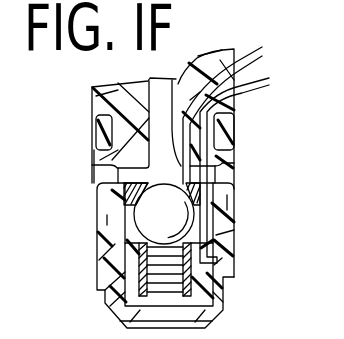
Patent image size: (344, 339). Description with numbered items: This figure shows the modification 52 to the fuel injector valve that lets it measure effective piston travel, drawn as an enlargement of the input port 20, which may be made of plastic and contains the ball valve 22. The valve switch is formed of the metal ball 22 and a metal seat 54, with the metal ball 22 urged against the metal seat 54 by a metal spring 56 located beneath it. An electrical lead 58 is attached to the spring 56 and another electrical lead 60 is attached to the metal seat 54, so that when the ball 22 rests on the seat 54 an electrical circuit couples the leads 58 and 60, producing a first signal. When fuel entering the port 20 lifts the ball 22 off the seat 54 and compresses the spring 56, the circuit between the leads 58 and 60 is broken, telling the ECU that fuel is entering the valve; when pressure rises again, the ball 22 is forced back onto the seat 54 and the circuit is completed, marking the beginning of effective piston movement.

The modification 52 is at (74, 92).
The input port 20 is at (121, 101).
The ball valve 22 is at (158, 214).
The metal seat 54 is at (198, 191).
The metal spring 56 is at (224, 277).
The electrical lead 58 is at (268, 76).
The electrical lead 60 is at (262, 47).